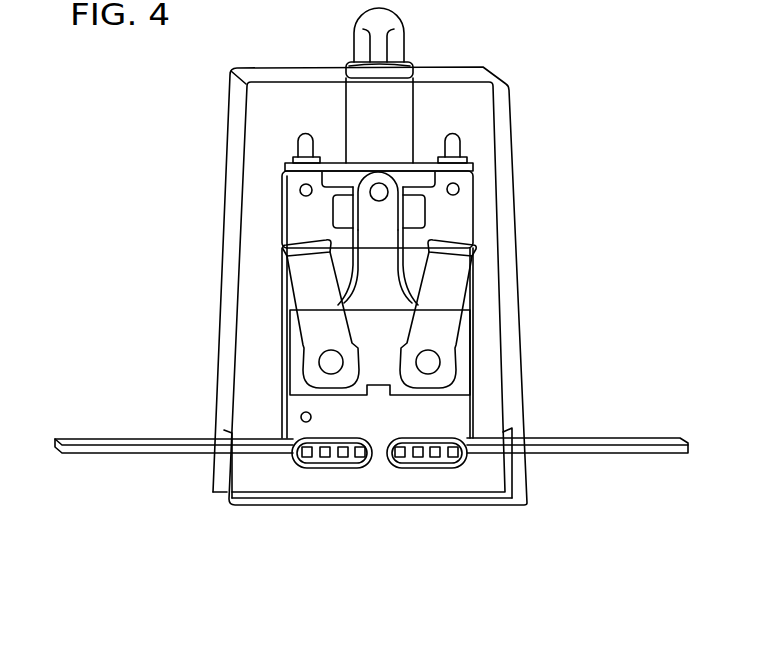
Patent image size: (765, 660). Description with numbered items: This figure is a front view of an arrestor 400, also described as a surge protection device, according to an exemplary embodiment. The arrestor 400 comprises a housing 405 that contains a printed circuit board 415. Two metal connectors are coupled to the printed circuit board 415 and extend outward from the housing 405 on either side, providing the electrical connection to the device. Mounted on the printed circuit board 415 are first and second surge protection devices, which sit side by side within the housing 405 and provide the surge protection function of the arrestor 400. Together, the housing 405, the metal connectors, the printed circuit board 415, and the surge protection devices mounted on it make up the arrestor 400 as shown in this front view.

The arrestor 400 is at (557, 51).
The housing 405 is at (512, 147).
The printed circuit board 415 is at (458, 224).